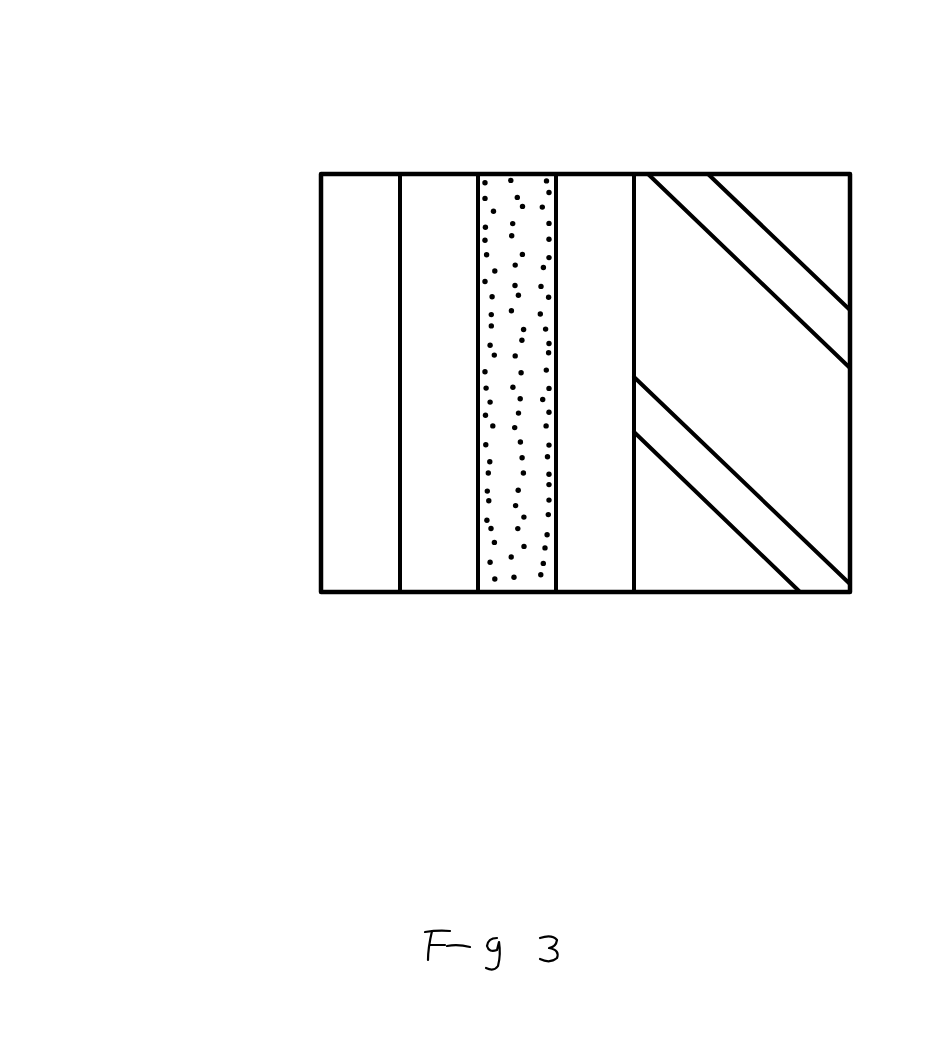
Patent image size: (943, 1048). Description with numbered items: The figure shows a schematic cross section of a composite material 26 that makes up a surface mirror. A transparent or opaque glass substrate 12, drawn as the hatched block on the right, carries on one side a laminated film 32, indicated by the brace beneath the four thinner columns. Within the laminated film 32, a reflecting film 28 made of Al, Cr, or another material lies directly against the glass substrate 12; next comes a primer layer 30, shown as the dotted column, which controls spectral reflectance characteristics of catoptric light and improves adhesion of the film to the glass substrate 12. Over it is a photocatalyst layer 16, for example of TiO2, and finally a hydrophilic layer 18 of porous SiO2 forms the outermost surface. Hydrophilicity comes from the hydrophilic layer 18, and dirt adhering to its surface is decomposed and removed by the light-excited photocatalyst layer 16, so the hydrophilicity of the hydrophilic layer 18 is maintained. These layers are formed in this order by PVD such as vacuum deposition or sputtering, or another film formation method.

The composite material 26 is at (233, 156).
The hydrophilic layer 18 is at (375, 218).
The photocatalyst layer 16 is at (455, 218).
The primer layer 30 is at (524, 217).
The reflecting film 28 is at (607, 222).
The glass substrate 12 is at (727, 216).
The laminated film 32 is at (637, 610).